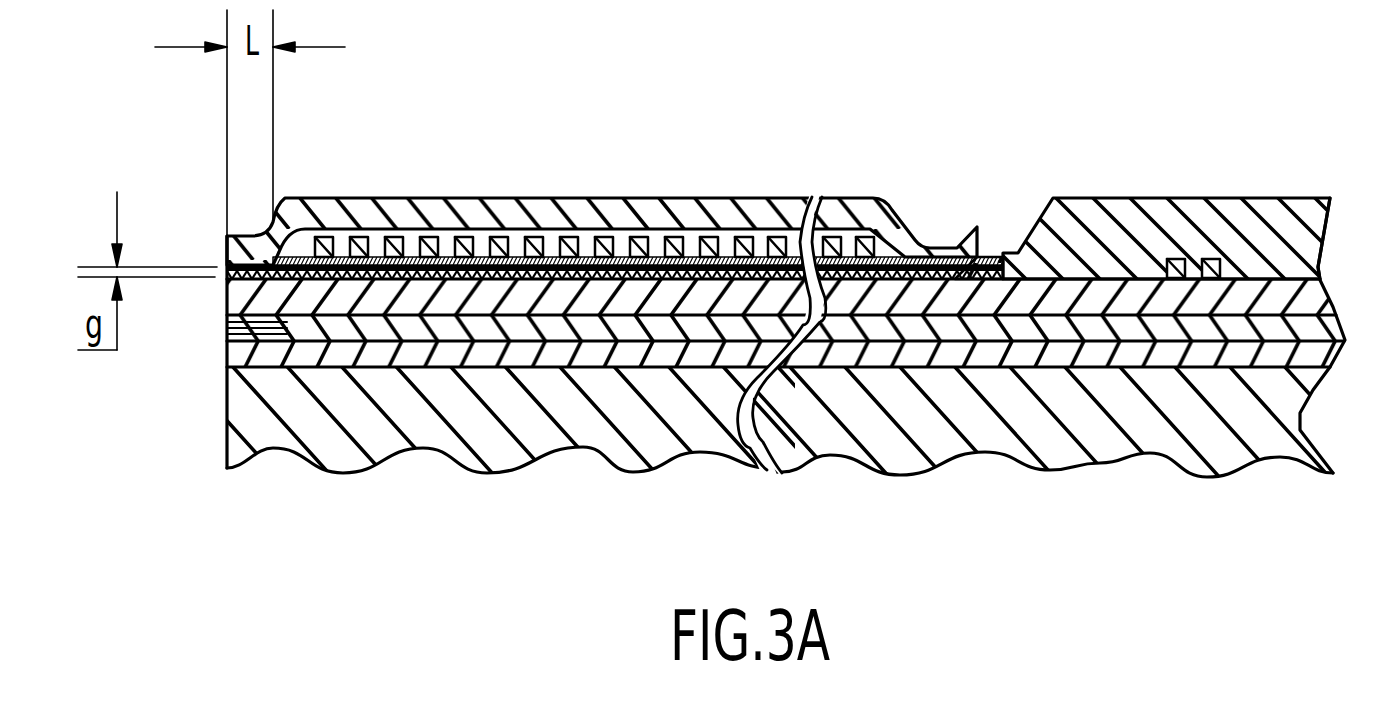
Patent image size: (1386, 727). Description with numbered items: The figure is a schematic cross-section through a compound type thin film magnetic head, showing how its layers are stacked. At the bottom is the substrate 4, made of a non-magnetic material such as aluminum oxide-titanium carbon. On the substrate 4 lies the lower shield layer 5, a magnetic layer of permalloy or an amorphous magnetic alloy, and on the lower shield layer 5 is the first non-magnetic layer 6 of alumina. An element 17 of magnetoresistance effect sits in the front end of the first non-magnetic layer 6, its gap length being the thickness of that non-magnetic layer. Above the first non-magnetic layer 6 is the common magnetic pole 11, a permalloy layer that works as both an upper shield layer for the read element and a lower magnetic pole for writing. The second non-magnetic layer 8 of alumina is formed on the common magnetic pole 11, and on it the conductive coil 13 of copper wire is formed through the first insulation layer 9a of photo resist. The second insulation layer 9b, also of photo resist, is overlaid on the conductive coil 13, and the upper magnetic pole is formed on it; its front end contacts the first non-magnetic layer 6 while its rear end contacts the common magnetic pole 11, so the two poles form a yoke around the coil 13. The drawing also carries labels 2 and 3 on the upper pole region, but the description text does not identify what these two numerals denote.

The upper core layer 2 is at (320, 198).
The rear core layer 3 is at (1197, 258).
The substrate 4 is at (227, 400).
The lower shield layer 5 is at (645, 367).
The first non-magnetic layer 6 is at (1127, 333).
The second non-magnetic layer 8 is at (217, 268).
The first insulation layer 9a is at (730, 248).
The second insulation layer 9b is at (493, 247).
The common magnetic pole 11 is at (227, 292).
The conductive coil 13 is at (940, 246).
The element of magnetoresistance effect 17 is at (280, 325).